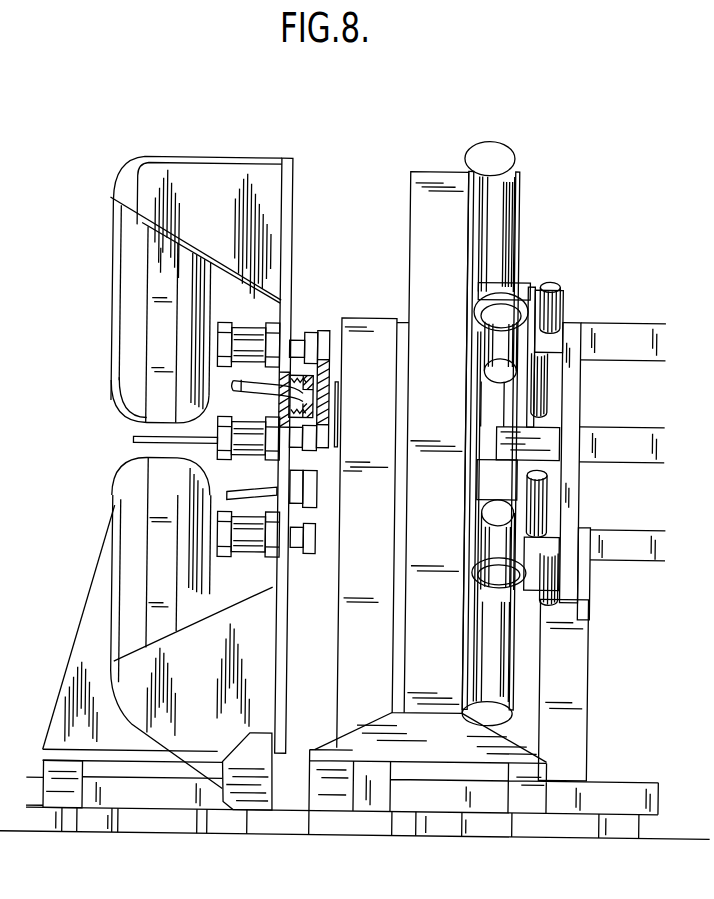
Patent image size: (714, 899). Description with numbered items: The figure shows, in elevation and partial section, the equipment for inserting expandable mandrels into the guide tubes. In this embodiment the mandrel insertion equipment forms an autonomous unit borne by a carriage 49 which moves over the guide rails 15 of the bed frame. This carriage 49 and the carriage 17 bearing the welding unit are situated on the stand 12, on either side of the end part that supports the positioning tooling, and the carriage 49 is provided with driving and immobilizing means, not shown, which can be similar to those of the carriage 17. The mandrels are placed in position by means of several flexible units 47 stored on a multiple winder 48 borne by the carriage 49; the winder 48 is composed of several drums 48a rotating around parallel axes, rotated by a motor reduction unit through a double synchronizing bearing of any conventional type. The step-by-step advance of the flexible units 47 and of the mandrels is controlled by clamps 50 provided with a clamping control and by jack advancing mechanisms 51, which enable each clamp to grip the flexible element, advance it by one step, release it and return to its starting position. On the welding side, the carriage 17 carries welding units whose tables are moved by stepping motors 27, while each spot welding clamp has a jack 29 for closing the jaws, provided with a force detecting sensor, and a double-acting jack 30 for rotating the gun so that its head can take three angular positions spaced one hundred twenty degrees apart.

The stand 12 is at (353, 695).
The guide rails 15 is at (139, 798).
The carriage 17 is at (425, 239).
The stepping motors 27 is at (505, 240).
The jack 29 is at (553, 310).
The double-acting jack 30 is at (539, 388).
The flexible units 47 is at (231, 387).
The multiple winder 48 is at (107, 255).
The drums 48a is at (130, 488).
The carriage 49 is at (286, 179).
The clamps 50 is at (324, 400).
The jack advancing mechanisms 51 is at (246, 341).